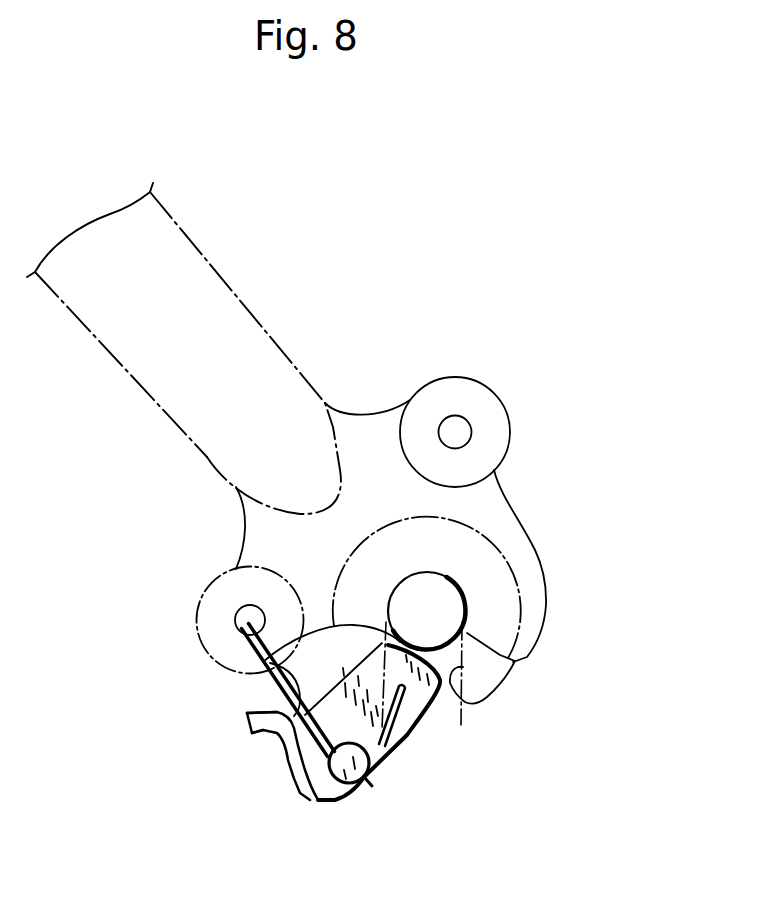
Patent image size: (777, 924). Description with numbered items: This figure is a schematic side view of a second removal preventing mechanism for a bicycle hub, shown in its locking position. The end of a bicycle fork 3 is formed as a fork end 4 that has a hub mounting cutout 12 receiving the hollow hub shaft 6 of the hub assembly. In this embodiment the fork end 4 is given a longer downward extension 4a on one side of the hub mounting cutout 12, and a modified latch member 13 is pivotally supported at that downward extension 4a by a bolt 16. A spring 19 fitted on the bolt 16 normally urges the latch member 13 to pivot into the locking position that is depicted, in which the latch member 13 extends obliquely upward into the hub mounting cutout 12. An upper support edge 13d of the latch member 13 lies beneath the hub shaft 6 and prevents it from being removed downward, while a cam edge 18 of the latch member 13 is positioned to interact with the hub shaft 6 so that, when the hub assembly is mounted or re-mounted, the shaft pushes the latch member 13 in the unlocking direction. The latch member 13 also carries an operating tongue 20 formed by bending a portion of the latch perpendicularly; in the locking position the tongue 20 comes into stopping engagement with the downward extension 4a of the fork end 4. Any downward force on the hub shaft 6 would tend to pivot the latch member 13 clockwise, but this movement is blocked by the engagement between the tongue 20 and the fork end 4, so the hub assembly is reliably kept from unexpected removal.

The fork 3 is at (253, 305).
The fork end 4 is at (547, 587).
The downward extension 4a is at (380, 790).
The hub shaft 6 is at (445, 590).
The hub mounting cutout 12 is at (465, 727).
The latch member 13 is at (450, 683).
The upper support edge 13d is at (623, 668).
The bolt 16 is at (340, 805).
The cam edge 18 is at (421, 701).
The spring 19 is at (297, 755).
The operating tongue 20 is at (258, 734).